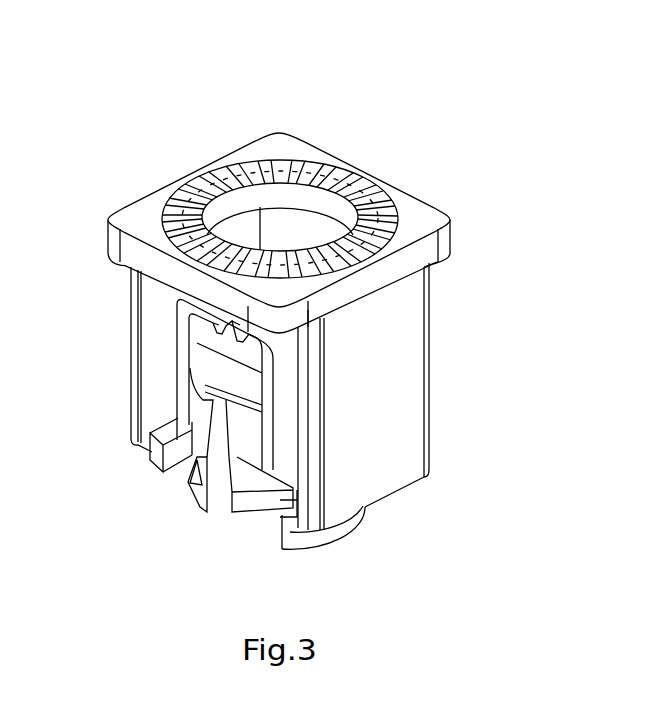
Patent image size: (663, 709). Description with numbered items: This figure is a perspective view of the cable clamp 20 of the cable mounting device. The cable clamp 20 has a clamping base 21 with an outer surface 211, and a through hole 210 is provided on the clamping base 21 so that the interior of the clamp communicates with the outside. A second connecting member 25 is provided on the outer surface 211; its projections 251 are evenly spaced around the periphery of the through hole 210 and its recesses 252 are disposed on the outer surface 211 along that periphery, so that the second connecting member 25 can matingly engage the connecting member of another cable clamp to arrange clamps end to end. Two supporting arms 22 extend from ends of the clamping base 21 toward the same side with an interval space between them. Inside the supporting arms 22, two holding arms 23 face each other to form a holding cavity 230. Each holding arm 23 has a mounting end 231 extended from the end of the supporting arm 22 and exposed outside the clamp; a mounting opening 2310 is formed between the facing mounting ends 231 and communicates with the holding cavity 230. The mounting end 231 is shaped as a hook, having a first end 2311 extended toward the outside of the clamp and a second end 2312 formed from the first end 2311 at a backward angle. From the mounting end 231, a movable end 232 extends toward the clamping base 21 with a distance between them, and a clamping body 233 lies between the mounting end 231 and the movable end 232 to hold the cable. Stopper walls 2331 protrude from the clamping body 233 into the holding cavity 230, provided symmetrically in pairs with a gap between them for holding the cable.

The cable clamp 20 is at (466, 333).
The clamping base 21 is at (137, 222).
The outer surface 211 is at (145, 212).
The through hole 210 is at (224, 196).
The second connecting member 25 is at (337, 165).
The projection 251 is at (345, 180).
The recess 252 is at (362, 184).
The supporting arm 22 is at (400, 350).
The holding arm 23 is at (183, 383).
The holding cavity 230 is at (208, 368).
The mounting end 231 is at (283, 538).
The movable end 232 is at (205, 315).
The clamping body 233 is at (190, 350).
The mounting opening 2310 is at (238, 522).
The first end 2311 is at (205, 514).
The second end 2312 is at (194, 482).
The stopper wall 2331 is at (150, 456).